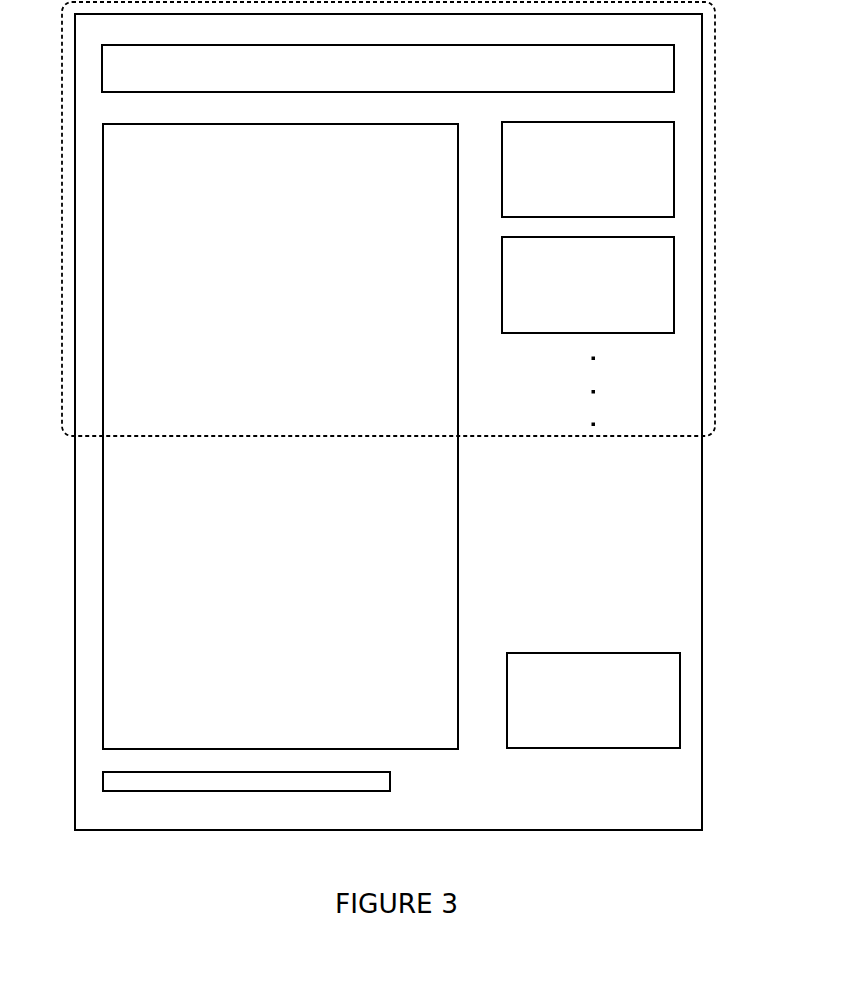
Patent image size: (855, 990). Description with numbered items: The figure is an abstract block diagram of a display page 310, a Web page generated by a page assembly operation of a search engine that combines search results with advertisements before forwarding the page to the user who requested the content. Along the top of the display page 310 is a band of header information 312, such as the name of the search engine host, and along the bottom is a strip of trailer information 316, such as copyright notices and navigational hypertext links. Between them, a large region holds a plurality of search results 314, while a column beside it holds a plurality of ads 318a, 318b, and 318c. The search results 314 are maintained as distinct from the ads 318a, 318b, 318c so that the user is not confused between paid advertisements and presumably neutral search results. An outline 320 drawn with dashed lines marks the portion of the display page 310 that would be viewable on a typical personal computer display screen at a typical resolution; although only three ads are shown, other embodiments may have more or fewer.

The display page 310 is at (388, 830).
The header information 312 is at (390, 45).
The search results 314 is at (458, 546).
The trailer information 316 is at (390, 781).
The ad 318a is at (586, 122).
The ad 318b is at (586, 237).
The ad 318c is at (593, 653).
The outline 320 is at (688, 436).